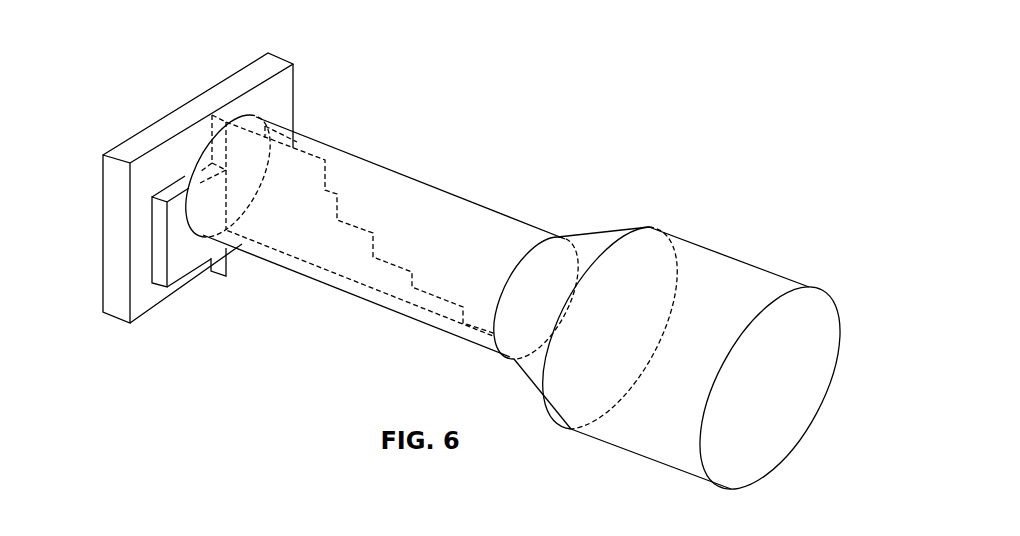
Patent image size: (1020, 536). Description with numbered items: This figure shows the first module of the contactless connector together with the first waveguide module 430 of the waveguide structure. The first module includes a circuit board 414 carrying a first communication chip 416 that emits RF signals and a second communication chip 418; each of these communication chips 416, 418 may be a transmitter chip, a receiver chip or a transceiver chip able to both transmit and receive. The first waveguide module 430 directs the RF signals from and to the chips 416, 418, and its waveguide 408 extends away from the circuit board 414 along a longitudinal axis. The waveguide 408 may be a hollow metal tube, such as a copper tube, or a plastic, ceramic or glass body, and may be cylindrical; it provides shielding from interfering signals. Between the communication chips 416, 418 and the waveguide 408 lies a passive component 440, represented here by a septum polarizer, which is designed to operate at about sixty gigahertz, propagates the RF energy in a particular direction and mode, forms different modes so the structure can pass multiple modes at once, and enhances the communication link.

The waveguide 408 is at (509, 229).
The circuit board 414 is at (115, 196).
The first communication chip 416 is at (190, 262).
The second communication chip 418 is at (265, 126).
The first waveguide module 430 is at (436, 154).
The passive component 440 is at (330, 188).